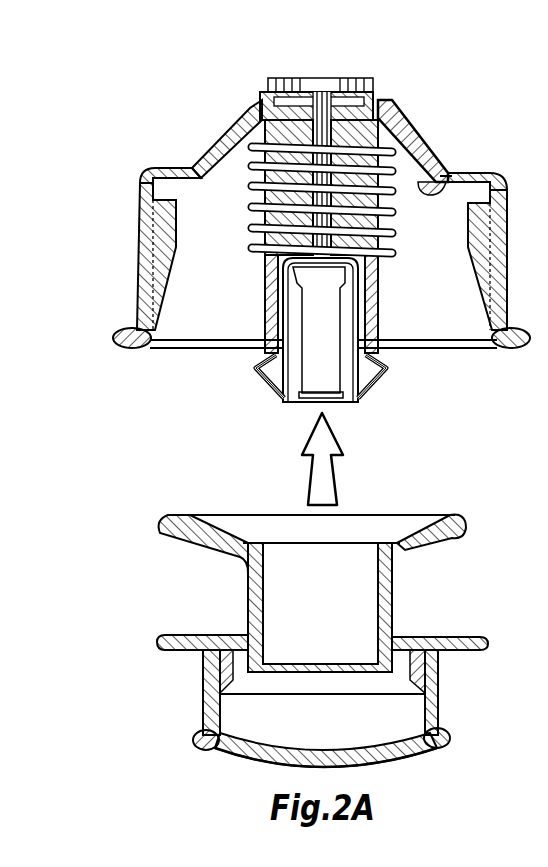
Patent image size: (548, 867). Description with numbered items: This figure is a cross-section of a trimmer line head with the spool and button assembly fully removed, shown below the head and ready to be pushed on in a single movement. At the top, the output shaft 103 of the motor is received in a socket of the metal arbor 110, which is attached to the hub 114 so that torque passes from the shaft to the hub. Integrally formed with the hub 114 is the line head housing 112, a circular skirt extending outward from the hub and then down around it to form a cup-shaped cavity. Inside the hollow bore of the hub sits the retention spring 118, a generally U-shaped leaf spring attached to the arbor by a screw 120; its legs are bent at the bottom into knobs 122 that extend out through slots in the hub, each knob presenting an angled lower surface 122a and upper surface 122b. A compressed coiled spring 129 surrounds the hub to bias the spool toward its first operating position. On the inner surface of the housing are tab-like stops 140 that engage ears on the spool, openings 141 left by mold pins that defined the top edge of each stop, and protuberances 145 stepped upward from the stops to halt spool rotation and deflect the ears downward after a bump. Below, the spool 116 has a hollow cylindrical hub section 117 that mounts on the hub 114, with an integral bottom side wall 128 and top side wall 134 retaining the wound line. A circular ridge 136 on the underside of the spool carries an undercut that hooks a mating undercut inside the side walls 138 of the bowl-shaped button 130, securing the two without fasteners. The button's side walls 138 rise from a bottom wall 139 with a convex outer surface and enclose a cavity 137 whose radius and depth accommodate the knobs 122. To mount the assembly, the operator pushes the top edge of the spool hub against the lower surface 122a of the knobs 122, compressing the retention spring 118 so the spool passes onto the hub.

The output shaft 103 is at (390, 118).
The metal arbor 110 is at (390, 122).
The line head housing 112 is at (146, 163).
The hub 114 is at (378, 277).
The spool 116 is at (425, 597).
The hub section 117 is at (248, 590).
The retention spring 118 is at (353, 338).
The screw 120 is at (320, 283).
The knob 122 is at (259, 373).
The lower surface 122a is at (260, 382).
The upper surface 122b is at (263, 362).
The bottom side wall 128 is at (190, 634).
The coiled spring 129 is at (227, 143).
The button 130 is at (450, 719).
The top side wall 134 is at (437, 540).
The circular ridge 136 is at (420, 677).
The cavity 137 is at (243, 728).
The side walls 138 is at (207, 700).
The bottom wall 139 is at (403, 760).
The stops 140 is at (142, 220).
The openings 141 is at (480, 172).
The protuberances 145 is at (447, 180).